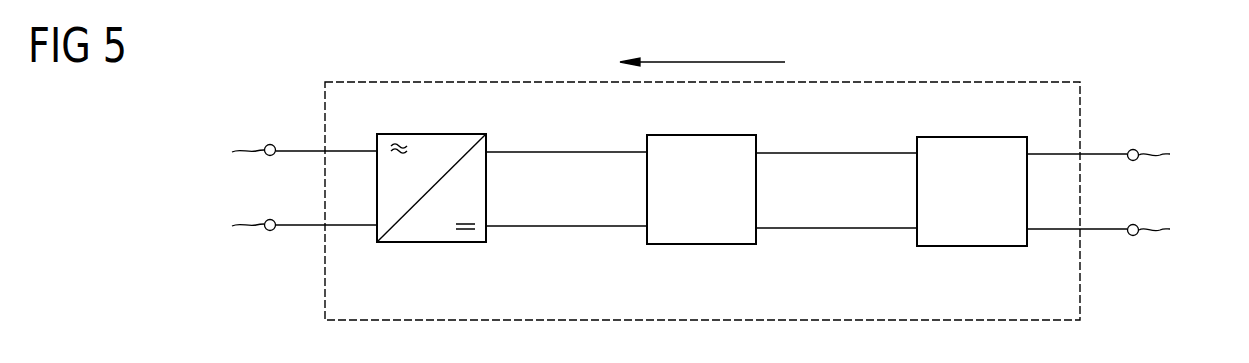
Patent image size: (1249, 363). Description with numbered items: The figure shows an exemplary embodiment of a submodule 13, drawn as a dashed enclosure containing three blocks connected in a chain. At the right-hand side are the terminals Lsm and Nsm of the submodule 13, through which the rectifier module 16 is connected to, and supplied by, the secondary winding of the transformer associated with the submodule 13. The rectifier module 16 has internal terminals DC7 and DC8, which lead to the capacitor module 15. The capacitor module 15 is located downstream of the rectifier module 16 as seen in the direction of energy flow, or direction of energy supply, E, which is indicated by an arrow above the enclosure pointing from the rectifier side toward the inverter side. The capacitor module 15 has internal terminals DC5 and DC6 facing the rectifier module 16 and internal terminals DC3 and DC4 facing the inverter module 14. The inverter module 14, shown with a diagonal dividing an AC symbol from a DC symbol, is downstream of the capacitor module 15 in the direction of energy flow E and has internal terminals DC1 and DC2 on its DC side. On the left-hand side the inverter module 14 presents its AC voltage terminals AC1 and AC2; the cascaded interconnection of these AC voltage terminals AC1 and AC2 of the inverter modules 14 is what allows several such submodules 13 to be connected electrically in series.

The submodule 13 is at (323, 283).
The inverter module 14 is at (432, 243).
The capacitor module 15 is at (702, 245).
The rectifier module 16 is at (973, 247).
The direction of energy flow E is at (743, 61).
The AC voltage terminal AC1 is at (282, 149).
The AC voltage terminal AC2 is at (282, 222).
The internal terminal of the inverter module DC1 is at (489, 143).
The internal terminal of the inverter module DC2 is at (489, 229).
The internal terminal of the capacitor module DC3 is at (645, 143).
The internal terminal of the capacitor module DC4 is at (645, 229).
The internal terminal of the capacitor module DC5 is at (758, 144).
The internal terminal of the capacitor module DC6 is at (758, 231).
The internal terminal of the rectifier module DC7 is at (915, 144).
The internal terminal of the rectifier module DC8 is at (915, 231).
The terminal of the submodule Lsm is at (1122, 156).
The terminal of the submodule Nsm is at (1124, 231).